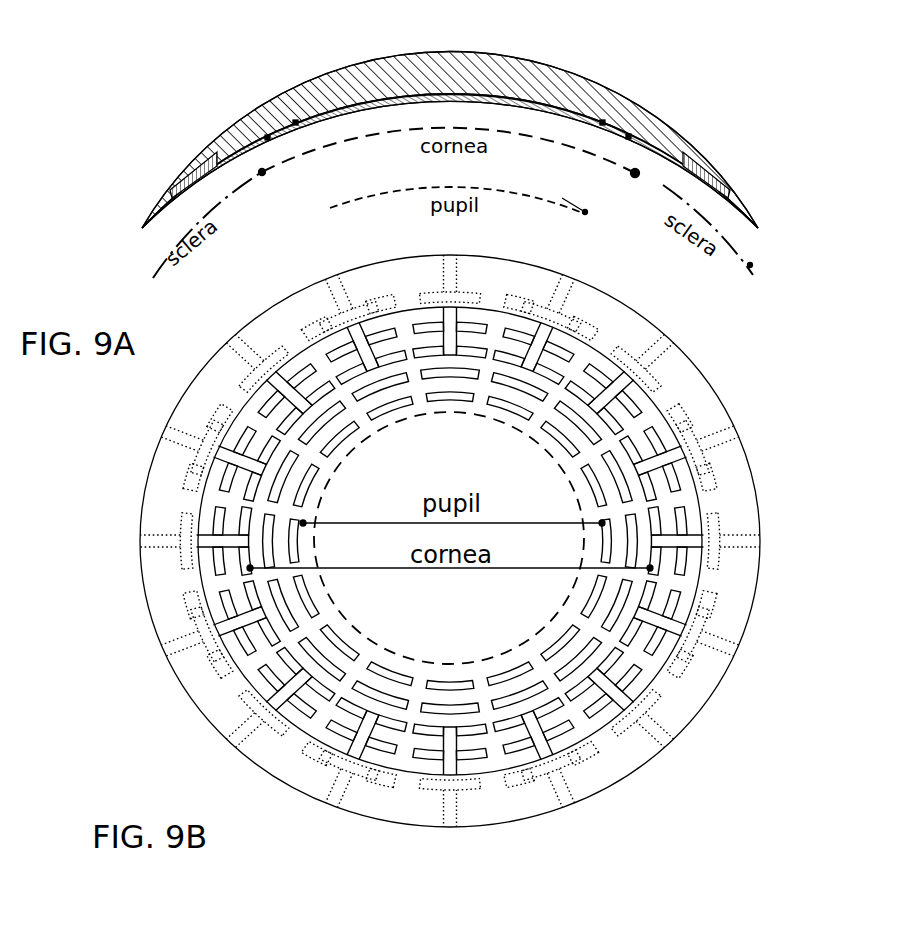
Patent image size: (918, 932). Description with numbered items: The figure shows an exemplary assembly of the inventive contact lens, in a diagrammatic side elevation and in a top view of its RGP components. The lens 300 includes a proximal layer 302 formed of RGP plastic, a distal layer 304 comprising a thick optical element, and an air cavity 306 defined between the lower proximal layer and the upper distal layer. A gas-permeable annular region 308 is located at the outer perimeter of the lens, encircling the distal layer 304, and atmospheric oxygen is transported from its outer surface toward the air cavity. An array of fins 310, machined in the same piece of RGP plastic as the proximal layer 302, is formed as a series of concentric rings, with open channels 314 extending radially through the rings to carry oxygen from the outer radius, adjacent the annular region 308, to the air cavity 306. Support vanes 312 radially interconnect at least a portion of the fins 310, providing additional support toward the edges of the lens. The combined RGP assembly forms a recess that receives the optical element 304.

In FIG. 9A, the lens 300 is at (237, 108).
In FIG. 9A, the proximal layer 302 is at (575, 120).
In FIG. 9A, the distal layer 304 is at (662, 132).
In FIG. 9A, the air cavity 306 is at (389, 96).
In FIG. 9B, the air cavity 306 is at (345, 587).
In FIG. 9A, the gas-permeable annular region 308 is at (730, 180).
In FIG. 9B, the gas-permeable annular region 308 is at (683, 387).
In FIG. 9A, the fins 310 is at (295, 126).
In FIG. 9B, the fins 310 is at (350, 428).
In FIG. 9A, the support vanes 312 is at (177, 177).
In FIG. 9B, the support vanes 312 is at (253, 468).
In FIG. 9B, the open channels 314 is at (693, 670).